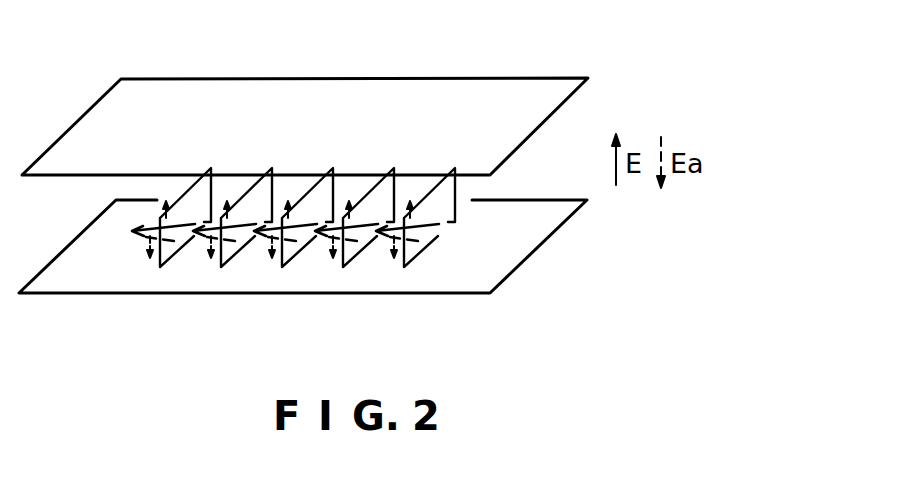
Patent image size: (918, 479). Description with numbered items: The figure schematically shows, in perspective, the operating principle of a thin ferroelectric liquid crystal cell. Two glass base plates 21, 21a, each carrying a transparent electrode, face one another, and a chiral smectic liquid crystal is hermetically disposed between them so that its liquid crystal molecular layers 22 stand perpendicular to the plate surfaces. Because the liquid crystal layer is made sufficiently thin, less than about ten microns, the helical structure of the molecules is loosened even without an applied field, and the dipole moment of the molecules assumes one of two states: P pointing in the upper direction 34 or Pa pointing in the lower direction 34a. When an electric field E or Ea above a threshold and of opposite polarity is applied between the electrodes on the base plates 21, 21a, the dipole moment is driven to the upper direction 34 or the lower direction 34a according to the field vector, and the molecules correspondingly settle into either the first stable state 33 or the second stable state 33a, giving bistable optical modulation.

The base plate 21 is at (537, 90).
The base plate 21a is at (517, 252).
The liquid crystal molecular layers 22 is at (453, 188).
The first stable state 33 is at (188, 224).
The second stable state 33a is at (166, 246).
The upper direction of dipole moment P 34 is at (163, 212).
The lower direction of dipole moment Pa 34a is at (147, 240).